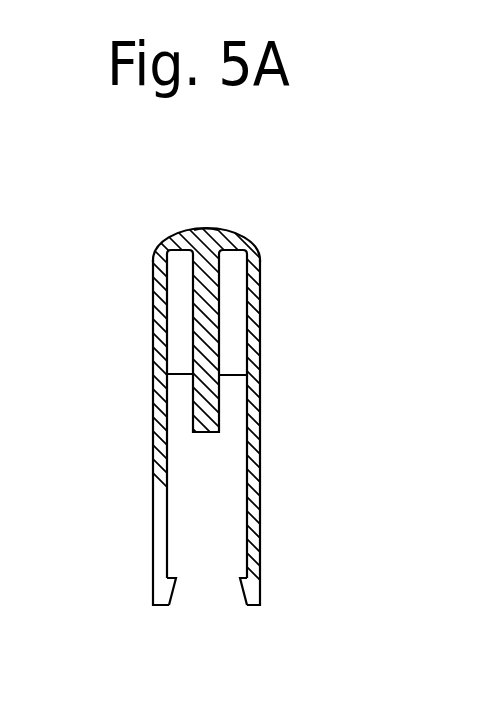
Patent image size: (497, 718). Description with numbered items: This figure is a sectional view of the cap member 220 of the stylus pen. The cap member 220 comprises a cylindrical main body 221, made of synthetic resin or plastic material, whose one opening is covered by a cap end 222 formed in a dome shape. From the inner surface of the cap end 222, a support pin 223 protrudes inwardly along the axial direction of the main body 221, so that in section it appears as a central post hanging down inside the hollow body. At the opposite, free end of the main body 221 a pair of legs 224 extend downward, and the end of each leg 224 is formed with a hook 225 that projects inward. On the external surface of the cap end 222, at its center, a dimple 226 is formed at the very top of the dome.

The cap member 220 is at (316, 277).
The cylindrical main body 221 is at (260, 321).
The cap end 222 is at (253, 238).
The support pin 223 is at (212, 432).
The leg 224 is at (153, 522).
The hook 225 is at (172, 603).
The dimple 226 is at (205, 229).